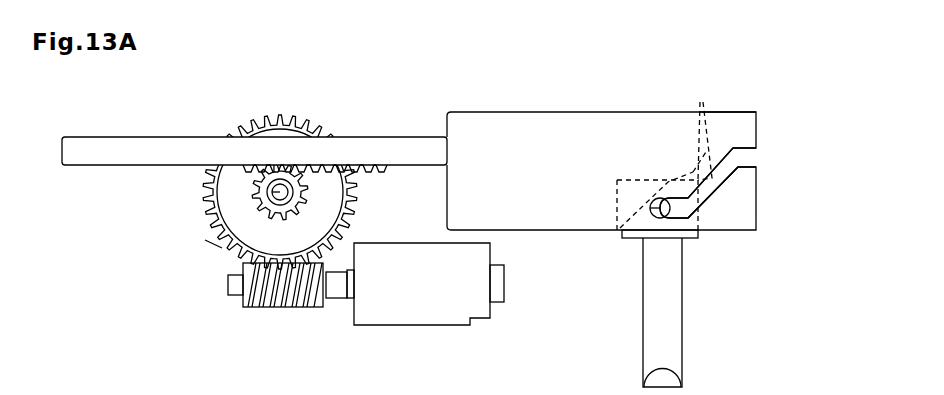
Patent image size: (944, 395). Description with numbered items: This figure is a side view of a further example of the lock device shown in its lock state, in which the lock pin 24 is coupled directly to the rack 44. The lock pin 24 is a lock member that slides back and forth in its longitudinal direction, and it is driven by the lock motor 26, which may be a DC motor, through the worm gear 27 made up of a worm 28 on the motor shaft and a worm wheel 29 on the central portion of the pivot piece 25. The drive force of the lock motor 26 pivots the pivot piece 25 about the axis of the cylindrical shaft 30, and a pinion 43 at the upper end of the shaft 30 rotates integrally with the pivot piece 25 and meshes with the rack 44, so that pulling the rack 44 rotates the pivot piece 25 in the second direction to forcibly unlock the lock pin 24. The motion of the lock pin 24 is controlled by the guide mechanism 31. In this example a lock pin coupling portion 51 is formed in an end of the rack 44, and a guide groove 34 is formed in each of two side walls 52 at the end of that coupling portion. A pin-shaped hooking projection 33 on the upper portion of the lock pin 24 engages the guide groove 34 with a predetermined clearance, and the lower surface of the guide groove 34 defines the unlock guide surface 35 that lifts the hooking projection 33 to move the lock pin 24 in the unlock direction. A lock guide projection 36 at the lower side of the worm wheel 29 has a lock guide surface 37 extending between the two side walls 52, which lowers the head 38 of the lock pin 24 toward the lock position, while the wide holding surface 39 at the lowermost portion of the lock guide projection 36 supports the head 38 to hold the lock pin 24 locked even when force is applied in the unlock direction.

The lock pin 24 is at (684, 347).
The pivot piece 25 is at (298, 119).
The lock motor 26 is at (429, 318).
The worm gear 27 is at (184, 276).
The worm 28 is at (264, 304).
The worm wheel 29 is at (215, 236).
The shaft 30 is at (262, 194).
The guide mechanism 31 is at (749, 75).
The hooking projection 33 is at (651, 215).
The guide groove 34 is at (746, 172).
The unlock guide surface 35 is at (724, 170).
The lock guide projection 36 is at (700, 152).
The lock guide surface 37 is at (704, 126).
The head 38 is at (708, 188).
The holding surface 39 is at (634, 184).
The pinion 43 is at (306, 194).
The rack 44 is at (141, 137).
The lock pin coupling portion 51 is at (562, 112).
The side wall 52 is at (744, 112).